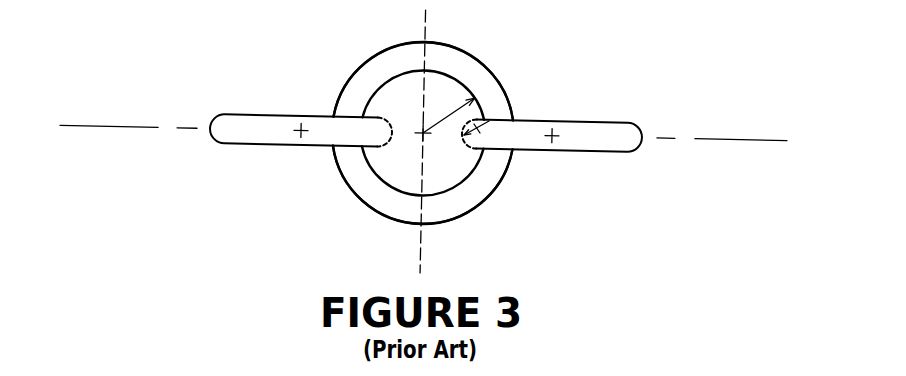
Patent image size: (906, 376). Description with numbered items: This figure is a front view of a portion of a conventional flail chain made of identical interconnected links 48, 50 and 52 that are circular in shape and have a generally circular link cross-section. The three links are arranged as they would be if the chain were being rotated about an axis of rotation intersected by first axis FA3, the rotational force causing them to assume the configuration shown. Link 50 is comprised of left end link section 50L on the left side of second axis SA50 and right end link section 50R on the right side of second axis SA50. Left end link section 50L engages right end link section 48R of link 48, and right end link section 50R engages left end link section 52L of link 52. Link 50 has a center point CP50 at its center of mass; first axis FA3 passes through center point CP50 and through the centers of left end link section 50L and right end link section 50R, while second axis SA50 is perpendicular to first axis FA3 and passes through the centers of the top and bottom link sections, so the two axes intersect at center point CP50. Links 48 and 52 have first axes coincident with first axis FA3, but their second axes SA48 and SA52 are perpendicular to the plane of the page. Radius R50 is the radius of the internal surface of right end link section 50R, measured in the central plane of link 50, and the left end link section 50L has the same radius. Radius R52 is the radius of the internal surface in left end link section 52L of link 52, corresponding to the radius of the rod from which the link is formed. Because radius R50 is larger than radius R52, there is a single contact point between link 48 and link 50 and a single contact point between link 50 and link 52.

The link 48 is at (292, 170).
The right end link section 48R is at (347, 133).
The link 50 is at (502, 52).
The left end link section 50L is at (377, 198).
The right end link section 50R is at (482, 192).
The link 52 is at (562, 100).
The left end link section 52L is at (502, 145).
The second axis SA48 is at (298, 128).
The second axis SA50 is at (421, 22).
The second axis SA52 is at (553, 135).
The center point CP50 is at (417, 125).
The radius R50 is at (443, 110).
The radius R52 is at (489, 121).
The first axis FA3 is at (82, 122).